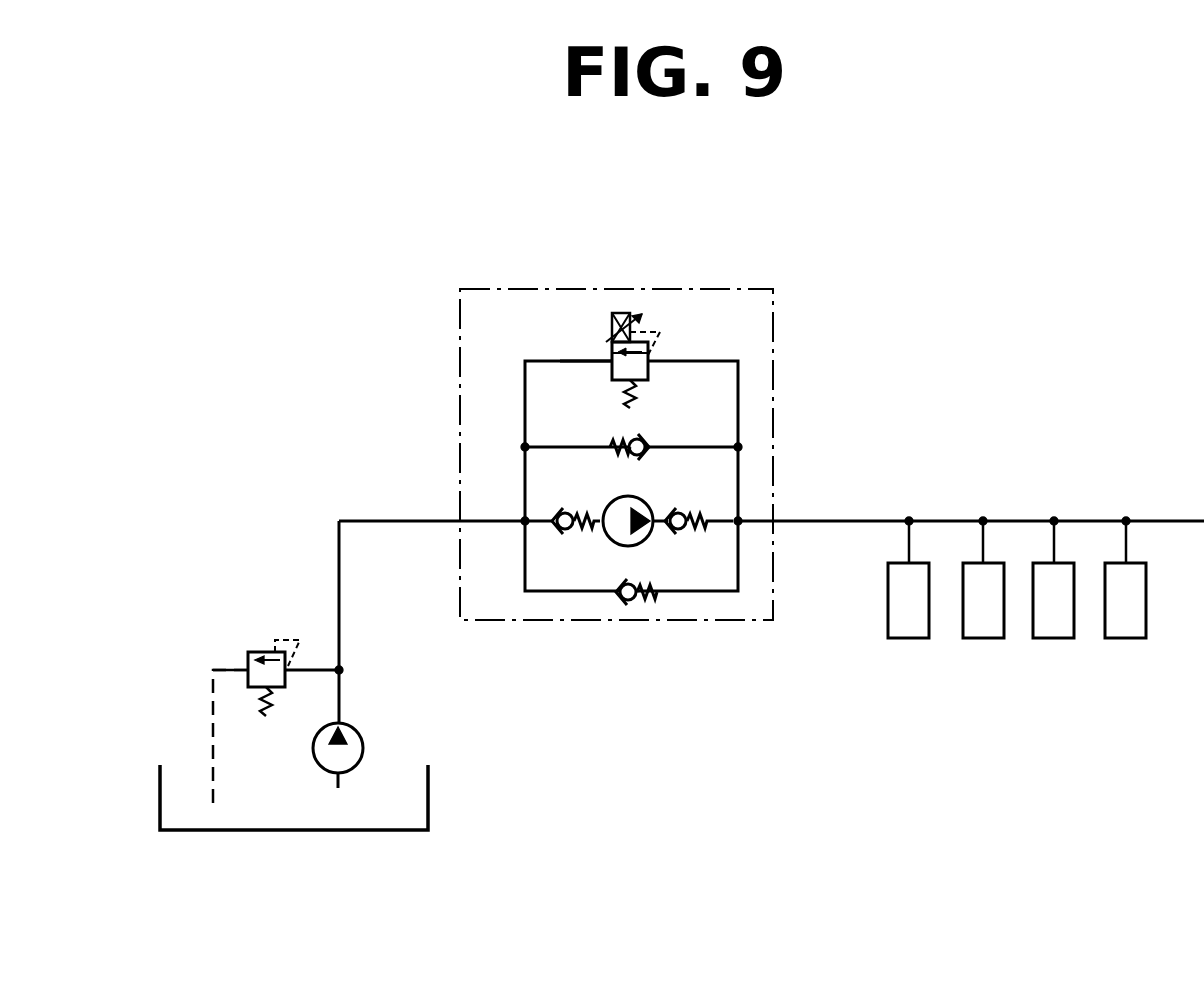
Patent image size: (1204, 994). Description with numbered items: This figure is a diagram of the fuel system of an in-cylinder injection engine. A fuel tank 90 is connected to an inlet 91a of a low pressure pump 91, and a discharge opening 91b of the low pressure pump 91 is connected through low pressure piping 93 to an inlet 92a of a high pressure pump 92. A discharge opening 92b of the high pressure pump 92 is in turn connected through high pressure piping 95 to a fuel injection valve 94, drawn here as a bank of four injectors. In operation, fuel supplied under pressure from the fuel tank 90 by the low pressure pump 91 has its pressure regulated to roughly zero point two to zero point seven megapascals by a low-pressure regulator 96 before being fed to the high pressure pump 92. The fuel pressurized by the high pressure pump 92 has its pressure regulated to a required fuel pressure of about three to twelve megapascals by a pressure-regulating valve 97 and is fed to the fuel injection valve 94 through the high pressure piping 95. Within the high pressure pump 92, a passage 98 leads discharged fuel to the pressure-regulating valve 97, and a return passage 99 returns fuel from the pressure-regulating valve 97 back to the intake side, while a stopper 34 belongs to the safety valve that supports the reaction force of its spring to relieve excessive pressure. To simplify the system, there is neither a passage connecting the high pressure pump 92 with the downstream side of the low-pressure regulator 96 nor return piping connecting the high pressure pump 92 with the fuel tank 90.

The stopper 34 is at (718, 524).
The fuel tank 90 is at (268, 831).
The low pressure pump 91 is at (363, 742).
The inlet 91a is at (338, 792).
The discharge opening 91b is at (340, 700).
The high pressure pump 92 is at (460, 327).
The inlet 92a is at (456, 519).
The discharge opening 92b is at (775, 520).
The low pressure piping 93 is at (366, 520).
The fuel injection valve 94 is at (1163, 659).
The high pressure piping 95 is at (950, 521).
The low-pressure regulator 96 is at (260, 652).
The pressure-regulating valve 97 is at (620, 313).
The passage 98 is at (738, 390).
The return passage 99 is at (573, 360).